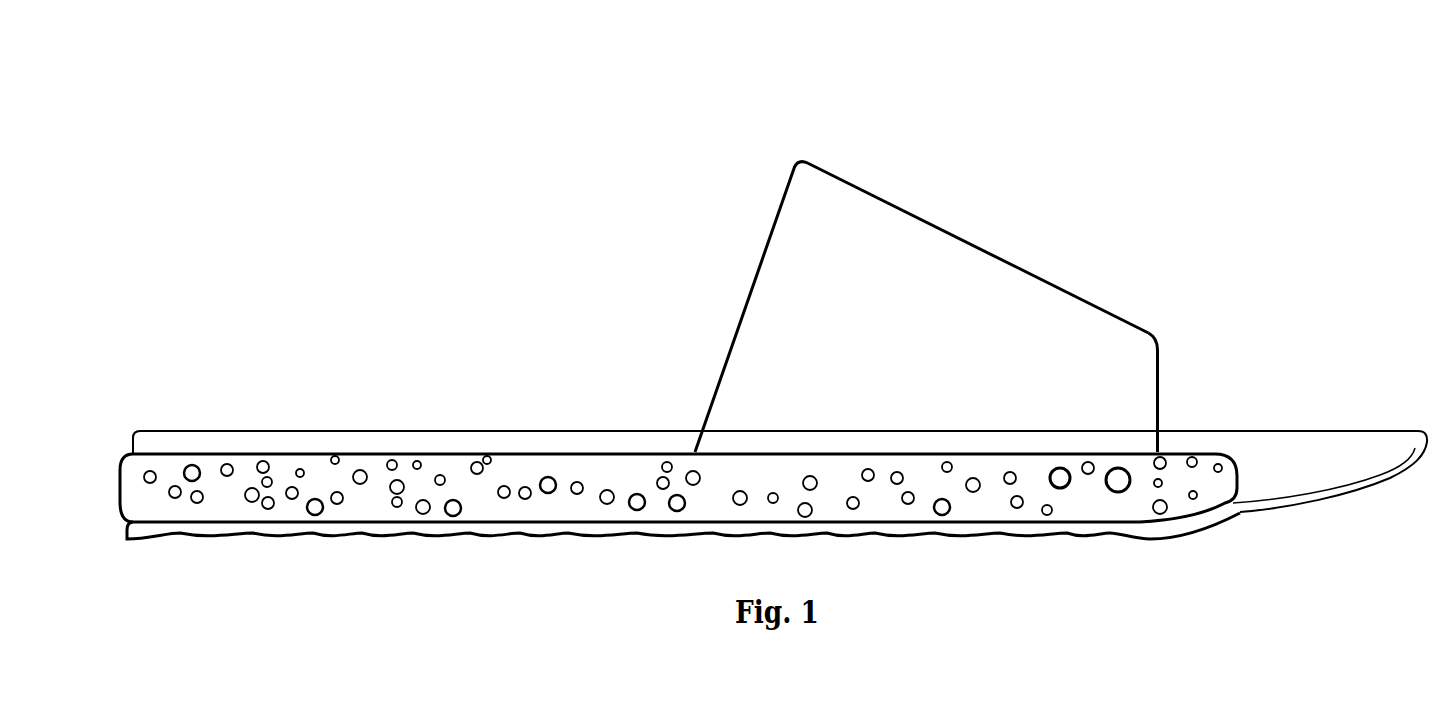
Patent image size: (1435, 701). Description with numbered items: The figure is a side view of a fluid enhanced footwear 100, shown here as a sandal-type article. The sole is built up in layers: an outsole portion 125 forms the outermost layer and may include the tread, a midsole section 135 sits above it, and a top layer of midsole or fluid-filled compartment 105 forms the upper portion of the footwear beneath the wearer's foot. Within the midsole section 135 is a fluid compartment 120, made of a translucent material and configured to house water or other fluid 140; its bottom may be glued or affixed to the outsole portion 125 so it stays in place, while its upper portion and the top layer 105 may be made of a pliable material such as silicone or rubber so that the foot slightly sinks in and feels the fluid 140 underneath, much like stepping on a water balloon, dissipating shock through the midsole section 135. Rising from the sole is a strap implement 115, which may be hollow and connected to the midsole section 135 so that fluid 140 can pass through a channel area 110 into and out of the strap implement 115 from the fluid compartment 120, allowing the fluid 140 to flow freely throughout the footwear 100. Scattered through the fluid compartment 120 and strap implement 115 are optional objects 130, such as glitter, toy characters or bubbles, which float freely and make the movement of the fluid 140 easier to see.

The fluid enhanced footwear 100 is at (666, 100).
The top layer of midsole or fluid-filled compartment 105 is at (487, 431).
The channel area 110 is at (697, 450).
The strap implement 115 is at (1140, 337).
The fluid compartment 120 is at (1193, 485).
The outsole portion 125 is at (1141, 540).
The objects 130 is at (943, 506).
The midsole section 135 is at (122, 484).
The fluid 140 is at (485, 503).